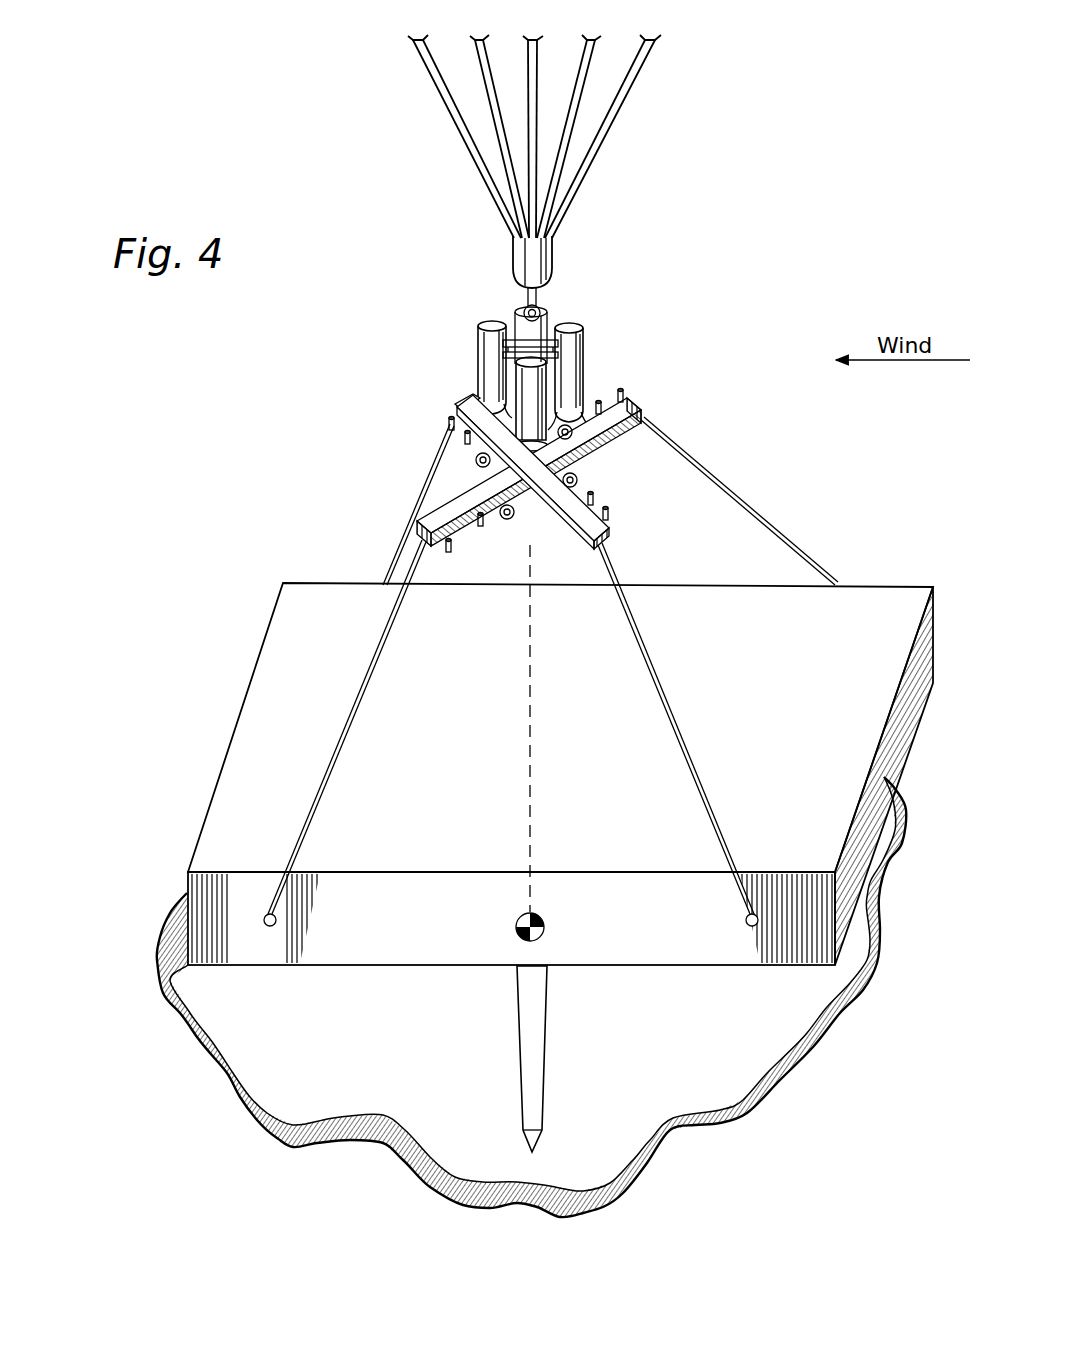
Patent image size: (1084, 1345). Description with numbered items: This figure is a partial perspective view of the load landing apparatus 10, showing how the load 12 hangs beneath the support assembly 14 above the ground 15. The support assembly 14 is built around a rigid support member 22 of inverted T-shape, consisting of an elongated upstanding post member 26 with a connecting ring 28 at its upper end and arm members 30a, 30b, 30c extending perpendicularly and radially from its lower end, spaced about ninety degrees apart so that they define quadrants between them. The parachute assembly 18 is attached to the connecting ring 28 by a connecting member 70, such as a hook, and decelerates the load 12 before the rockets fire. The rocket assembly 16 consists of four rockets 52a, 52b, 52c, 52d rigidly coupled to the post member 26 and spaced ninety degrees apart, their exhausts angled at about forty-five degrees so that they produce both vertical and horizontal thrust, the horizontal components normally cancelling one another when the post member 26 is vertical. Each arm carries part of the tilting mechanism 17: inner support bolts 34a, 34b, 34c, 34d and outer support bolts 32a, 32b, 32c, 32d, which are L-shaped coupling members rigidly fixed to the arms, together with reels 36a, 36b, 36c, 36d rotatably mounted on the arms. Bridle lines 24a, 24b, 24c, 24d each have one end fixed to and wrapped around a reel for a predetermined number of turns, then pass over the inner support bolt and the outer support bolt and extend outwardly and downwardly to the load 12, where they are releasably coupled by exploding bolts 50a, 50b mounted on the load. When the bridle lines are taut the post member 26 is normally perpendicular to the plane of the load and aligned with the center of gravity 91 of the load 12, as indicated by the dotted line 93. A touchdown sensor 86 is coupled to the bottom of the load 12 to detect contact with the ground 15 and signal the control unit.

The load landing apparatus 10 is at (340, 112).
The load 12 is at (232, 638).
The support assembly 14 is at (398, 444).
The ground 15 is at (782, 1038).
The rocket assembly 16 is at (462, 357).
The tilting mechanism 17 is at (395, 547).
The parachute assembly 18 is at (627, 105).
The support member 22 is at (455, 398).
The bridle line 24a is at (380, 687).
The bridle line 24b is at (675, 690).
The bridle line 24c is at (800, 553).
The bridle line 24d is at (413, 512).
The post member 26 is at (548, 318).
The connecting ring 28 is at (545, 300).
The arm member 30a is at (415, 548).
The arm member 30b is at (588, 553).
The arm member 30c is at (645, 428).
The outer support bolt 32a is at (480, 532).
The outer support bolt 32b is at (610, 516).
The outer support bolt 32c is at (626, 391).
The outer support bolt 32d is at (452, 420).
The inner support bolt 34a is at (452, 556).
The inner support bolt 34b is at (598, 497).
The inner support bolt 34c is at (602, 402).
The inner support bolt 34d is at (468, 444).
The reel 36a is at (509, 521).
The reel 36b is at (578, 485).
The reel 36c is at (642, 408).
The reel 36d is at (476, 463).
The exploding bolt 50a is at (280, 918).
The exploding bolt 50b is at (746, 922).
The rocket 52a is at (490, 330).
The rocket 52b is at (548, 378).
The rocket 52c is at (585, 335).
The rocket 52d is at (517, 318).
The connecting member 70 is at (548, 275).
The touchdown sensor 86 is at (548, 1030).
The center of gravity 91 is at (546, 918).
The dotted line 93 is at (535, 736).